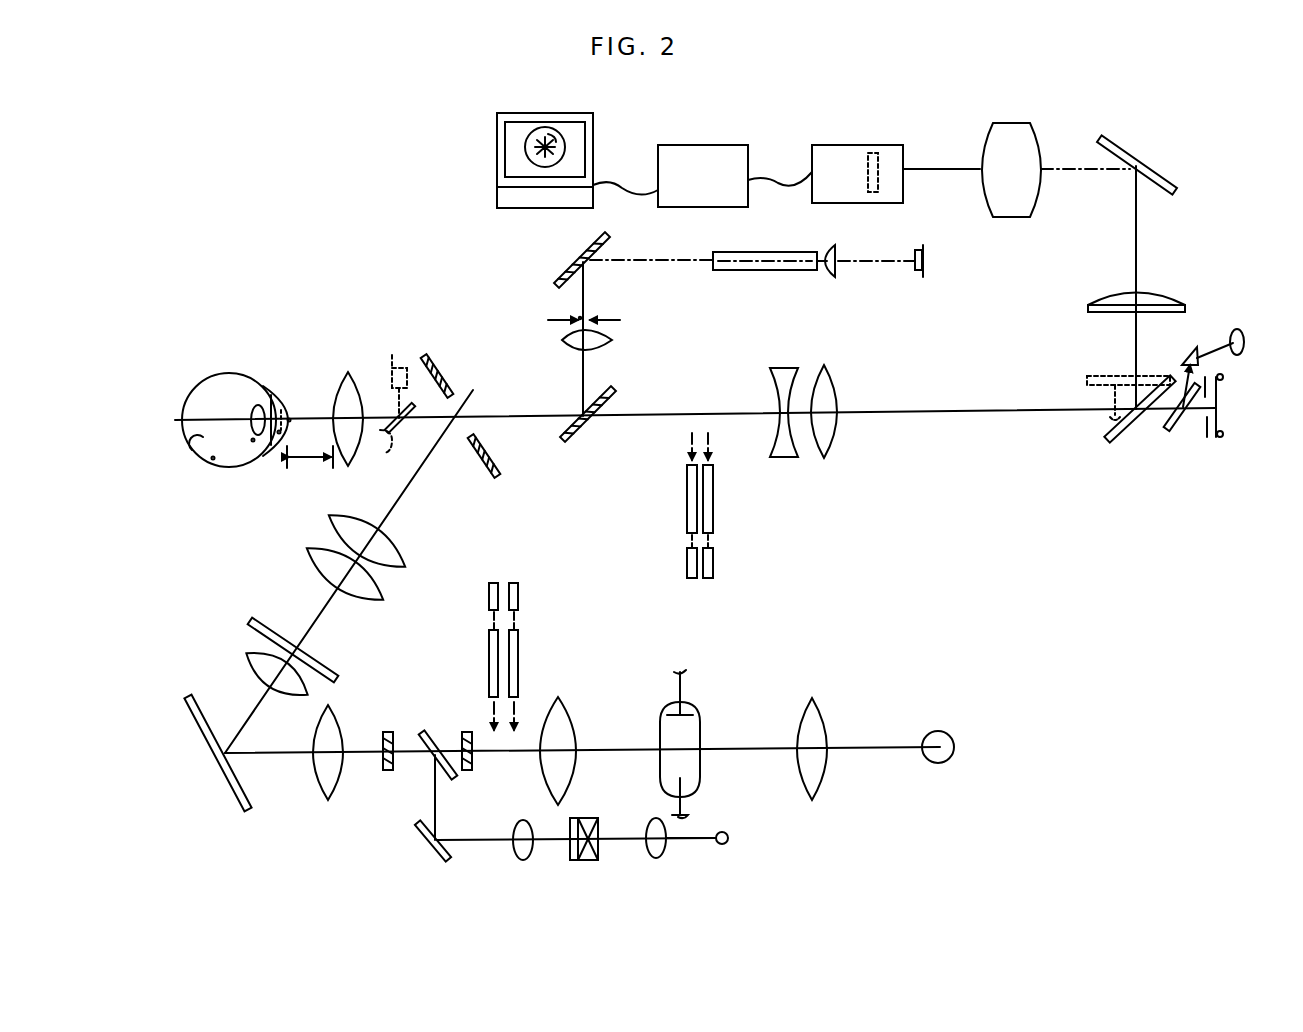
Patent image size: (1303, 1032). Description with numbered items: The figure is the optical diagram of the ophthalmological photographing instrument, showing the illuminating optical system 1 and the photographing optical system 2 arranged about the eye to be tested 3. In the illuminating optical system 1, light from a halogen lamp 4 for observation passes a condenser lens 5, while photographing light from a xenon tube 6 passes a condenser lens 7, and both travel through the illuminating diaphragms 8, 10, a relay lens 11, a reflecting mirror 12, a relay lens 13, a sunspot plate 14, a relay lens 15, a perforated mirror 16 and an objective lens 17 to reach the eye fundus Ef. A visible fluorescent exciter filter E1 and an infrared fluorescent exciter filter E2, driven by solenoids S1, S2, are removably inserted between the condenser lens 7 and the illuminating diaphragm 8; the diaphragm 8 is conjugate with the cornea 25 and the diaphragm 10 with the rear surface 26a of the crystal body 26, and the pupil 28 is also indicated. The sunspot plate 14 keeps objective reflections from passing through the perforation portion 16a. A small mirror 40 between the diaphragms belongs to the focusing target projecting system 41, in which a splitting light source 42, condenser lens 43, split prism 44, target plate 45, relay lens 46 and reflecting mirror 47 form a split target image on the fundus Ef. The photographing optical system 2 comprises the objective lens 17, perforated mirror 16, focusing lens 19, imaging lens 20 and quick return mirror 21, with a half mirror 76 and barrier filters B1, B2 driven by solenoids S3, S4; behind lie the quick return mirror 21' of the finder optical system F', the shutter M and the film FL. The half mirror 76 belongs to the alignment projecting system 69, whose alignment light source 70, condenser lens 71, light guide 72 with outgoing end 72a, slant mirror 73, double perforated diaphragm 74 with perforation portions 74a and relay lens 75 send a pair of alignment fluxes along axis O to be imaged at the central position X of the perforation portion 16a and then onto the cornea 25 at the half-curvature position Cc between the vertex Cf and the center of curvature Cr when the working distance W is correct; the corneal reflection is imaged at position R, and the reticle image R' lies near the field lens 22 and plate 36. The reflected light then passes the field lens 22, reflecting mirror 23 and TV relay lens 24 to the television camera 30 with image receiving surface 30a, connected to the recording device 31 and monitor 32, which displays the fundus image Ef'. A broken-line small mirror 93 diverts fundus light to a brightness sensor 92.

The illuminating optical system 1 is at (655, 760).
The photographing optical system 2 is at (938, 402).
The eye to be tested 3 is at (235, 373).
The halogen lamp 4 is at (945, 732).
The condenser lens 5 is at (827, 768).
The xenon tube 6 is at (702, 765).
The condenser lens 7 is at (540, 770).
The illuminating diaphragm 8 is at (467, 770).
The illuminating diaphragm 10 is at (388, 770).
The relay lens 11 is at (315, 782).
The reflecting mirror 12 is at (230, 797).
The relay lens 13 is at (245, 660).
The sunspot plate 14 is at (262, 630).
The relay lens 15 is at (378, 570).
The perforated mirror 16 is at (452, 368).
The perforation portion 16a is at (400, 372).
The objective lens 17 is at (348, 372).
The focusing lens 19 is at (785, 457).
The imaging lens 20 is at (833, 440).
The quick return mirror 21 is at (1139, 410).
The quick return mirror 21' is at (1158, 434).
The field lens 22 is at (1165, 292).
The reflecting mirror 23 is at (1140, 148).
The TV relay lens 24 is at (1017, 140).
The cornea 25 is at (283, 405).
The crystal body 26 is at (258, 436).
The rear surface of crystal body 26a is at (240, 387).
The pupil 28 is at (268, 390).
The television camera 30 is at (835, 145).
The image receiving surface 30a is at (878, 170).
The electronic picture recording device 31 is at (735, 145).
The monitor 32 is at (497, 130).
The reticle plate 36 is at (1150, 312).
The small mirror 40 is at (433, 725).
The focusing target projecting system 41 is at (549, 850).
The splitting light source 42 is at (728, 838).
The condenser lens 43 is at (666, 846).
The split prism 44 is at (590, 865).
The target plate 45 is at (570, 818).
The relay lens 46 is at (515, 855).
The reflecting mirror 47 is at (425, 845).
The alignment projecting system 69 is at (668, 256).
The alignment light source 70 is at (928, 245).
The condenser lens 71 is at (842, 252).
The light guide 72 is at (785, 252).
The outgoing end 72a is at (713, 258).
The slant mirror 73 is at (572, 250).
The double perforated diaphragm 74 is at (548, 320).
The perforation portion 74a is at (578, 318).
The relay lens 75 is at (612, 340).
The half mirror 76 is at (613, 388).
The sensor 92 is at (399, 368).
The small mirror 93 is at (388, 455).
The visible fluorescent barrier filter B1 is at (713, 500).
The infrared fluorescent barrier filter B2 is at (687, 503).
The solenoid S1 is at (513, 583).
The solenoid S2 is at (493, 583).
The solenoid S3 is at (708, 578).
The solenoid S4 is at (692, 578).
The visible fluorescent exciter filter E1 is at (518, 655).
The infrared fluorescent exciter filter E2 is at (489, 655).
The vertex of the cornea Cf is at (291, 418).
The ½ position of the curvature of the cornea Cc is at (282, 440).
The center of curvature of the cornea Cr is at (258, 445).
The eye fundus Ef is at (190, 497).
The eye fundus image Ef' is at (592, 133).
The position conjugate with the eye fundus R is at (405, 432).
The reticle image R' is at (1101, 329).
The optical axis O is at (587, 288).
The central position of the perforation portion X is at (363, 561).
The working distance W is at (310, 468).
The shutter M is at (1205, 440).
The finder optical system F' is at (1224, 318).
The film FL is at (1224, 384).